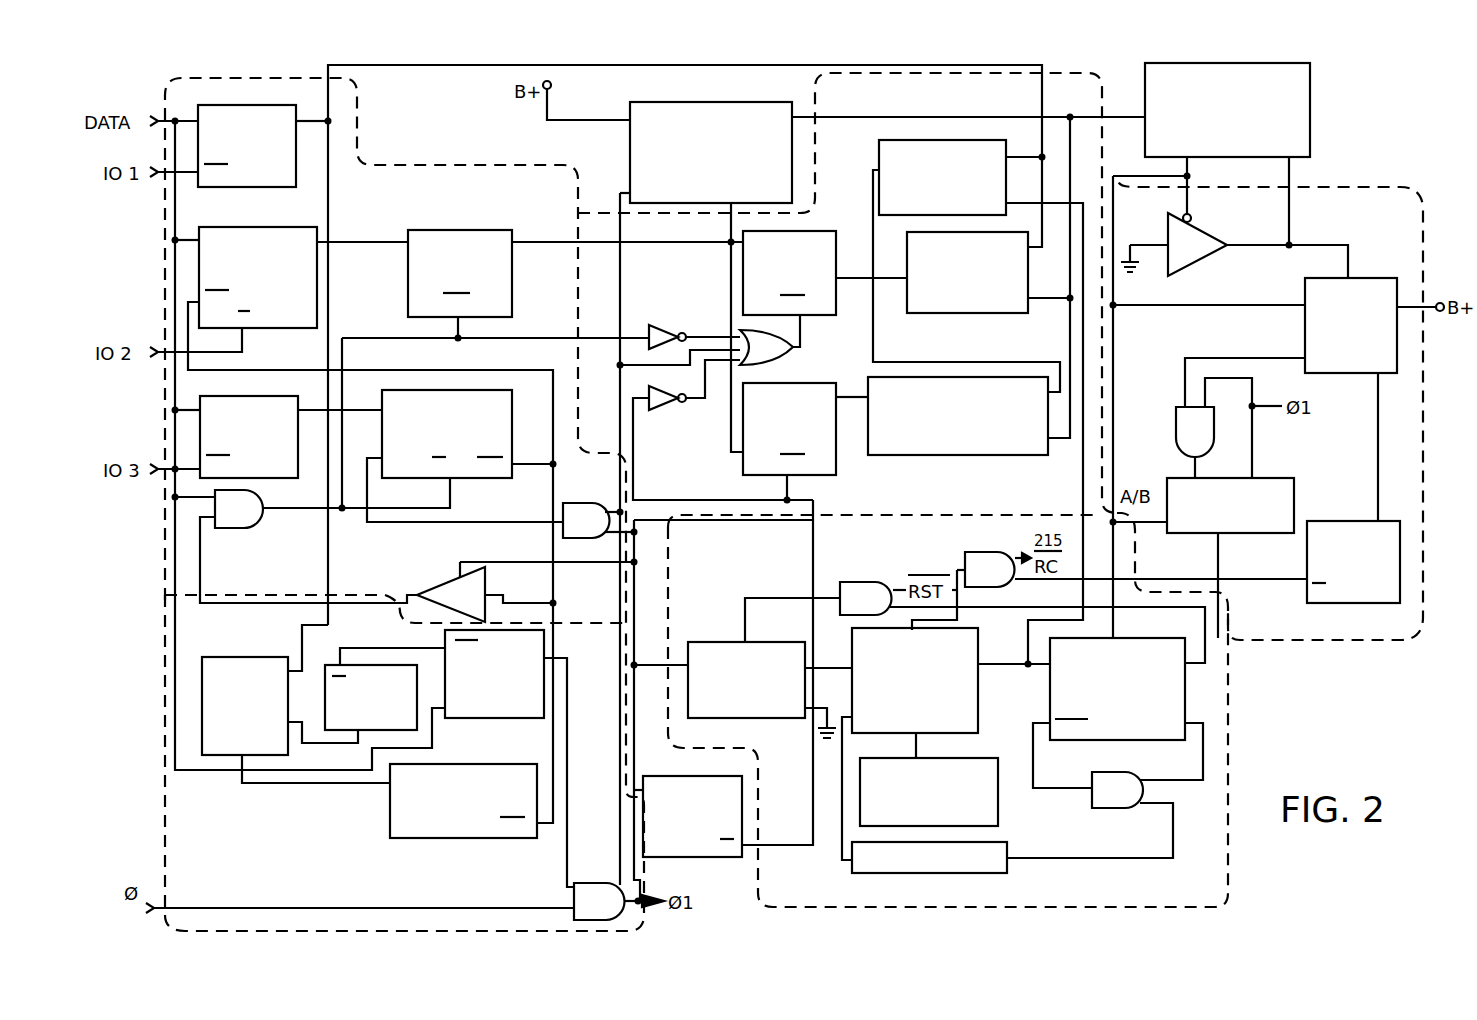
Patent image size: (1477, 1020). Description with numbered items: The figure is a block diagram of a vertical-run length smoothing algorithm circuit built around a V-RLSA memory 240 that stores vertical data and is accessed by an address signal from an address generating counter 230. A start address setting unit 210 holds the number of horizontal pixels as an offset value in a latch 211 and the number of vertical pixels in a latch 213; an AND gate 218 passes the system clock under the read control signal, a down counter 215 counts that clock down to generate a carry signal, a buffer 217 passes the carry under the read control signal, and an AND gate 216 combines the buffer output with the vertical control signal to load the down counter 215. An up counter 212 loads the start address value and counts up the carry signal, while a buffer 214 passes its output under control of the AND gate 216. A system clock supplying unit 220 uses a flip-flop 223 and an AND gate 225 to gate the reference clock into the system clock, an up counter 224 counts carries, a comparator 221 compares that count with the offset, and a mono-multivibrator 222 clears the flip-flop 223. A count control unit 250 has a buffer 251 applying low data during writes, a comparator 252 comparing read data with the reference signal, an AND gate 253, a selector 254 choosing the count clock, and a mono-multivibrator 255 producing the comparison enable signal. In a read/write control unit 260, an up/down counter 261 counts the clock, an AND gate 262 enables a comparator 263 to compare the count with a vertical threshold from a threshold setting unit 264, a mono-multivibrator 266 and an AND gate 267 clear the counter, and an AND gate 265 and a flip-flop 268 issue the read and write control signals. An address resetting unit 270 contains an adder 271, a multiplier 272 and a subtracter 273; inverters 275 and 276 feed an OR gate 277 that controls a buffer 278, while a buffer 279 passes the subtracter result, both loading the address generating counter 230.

The start address setting unit 210 is at (183, 78).
The latch 211 is at (285, 110).
The up counter 212 is at (300, 238).
The latch 213 is at (238, 405).
The buffer 214 is at (480, 220).
The down counter 215 is at (502, 392).
The AND gate 216 is at (258, 518).
The buffer 217 is at (468, 572).
The AND gate 218 is at (598, 505).
The system clock supplying unit 220 is at (165, 638).
The comparator 221 is at (225, 665).
The mono-multivibrator 222 is at (400, 668).
The flip-flop 223 is at (528, 712).
The up counter 224 is at (426, 838).
The AND gate 225 is at (574, 895).
The address generating counter 230 is at (738, 103).
The V-RLSA memory 240 is at (1306, 110).
The count control unit 250 is at (1398, 192).
The buffer 251 is at (1180, 268).
The comparator 252 is at (1322, 285).
The AND gate 253 is at (1185, 440).
The selector 254 is at (1283, 485).
The mono-multivibrator 255 is at (1350, 530).
The read/write control unit 260 is at (1230, 708).
The up/down counter 261 is at (1180, 637).
The AND gate 262 is at (972, 562).
The comparator 263 is at (965, 712).
The threshold setting unit 264 is at (996, 808).
The AND gate 265 is at (884, 590).
The mono-multivibrator 266 is at (990, 874).
The AND gate 267 is at (1108, 800).
The flip-flop 268 is at (785, 642).
The address resetting unit 270 is at (1120, 76).
The adder 271 is at (938, 313).
The multiplier 272 is at (950, 140).
The subtracter 273 is at (958, 448).
The inverter 275 is at (660, 328).
The inverter 276 is at (662, 404).
The OR gate 277 is at (785, 342).
The buffer 278 is at (816, 240).
The buffer 279 is at (820, 458).